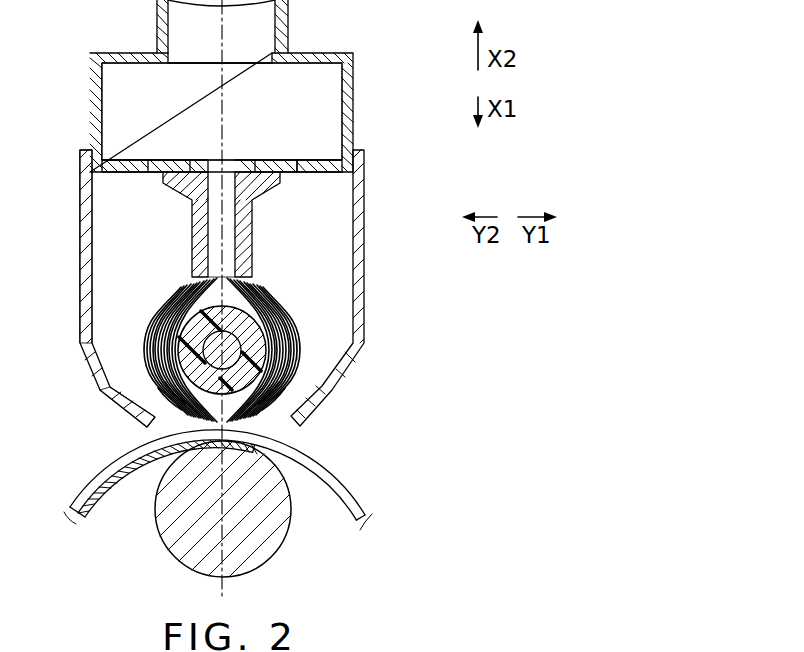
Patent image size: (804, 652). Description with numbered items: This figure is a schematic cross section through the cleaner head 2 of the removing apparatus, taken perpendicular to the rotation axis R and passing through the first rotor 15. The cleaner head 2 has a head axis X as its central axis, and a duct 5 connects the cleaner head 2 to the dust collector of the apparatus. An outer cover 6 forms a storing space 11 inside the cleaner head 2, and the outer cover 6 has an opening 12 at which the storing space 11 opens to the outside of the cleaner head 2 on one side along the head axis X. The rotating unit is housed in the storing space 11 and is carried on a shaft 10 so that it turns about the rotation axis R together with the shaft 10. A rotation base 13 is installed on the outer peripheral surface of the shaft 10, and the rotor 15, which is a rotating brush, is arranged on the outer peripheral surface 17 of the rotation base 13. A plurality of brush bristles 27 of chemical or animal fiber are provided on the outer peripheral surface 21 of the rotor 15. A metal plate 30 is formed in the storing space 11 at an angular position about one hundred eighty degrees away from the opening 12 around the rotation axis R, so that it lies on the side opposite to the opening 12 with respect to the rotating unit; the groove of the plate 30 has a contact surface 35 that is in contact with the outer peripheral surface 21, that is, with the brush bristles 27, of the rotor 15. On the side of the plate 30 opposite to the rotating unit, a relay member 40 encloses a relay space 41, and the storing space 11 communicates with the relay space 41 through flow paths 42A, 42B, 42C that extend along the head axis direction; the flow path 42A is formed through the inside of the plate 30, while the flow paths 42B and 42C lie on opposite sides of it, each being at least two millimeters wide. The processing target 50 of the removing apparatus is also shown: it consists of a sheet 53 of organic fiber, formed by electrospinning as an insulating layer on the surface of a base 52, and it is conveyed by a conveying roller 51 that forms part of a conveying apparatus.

The cleaner head 2 is at (378, 137).
The duct 5 is at (288, 21).
The outer cover 6 is at (80, 307).
The shaft 10 is at (152, 368).
The storing space 11 is at (94, 249).
The opening 12 is at (162, 425).
The rotation base 13 is at (252, 356).
The rotor 15 is at (265, 307).
The outer peripheral surface of the rotation base 17 is at (258, 404).
The outer peripheral surface of the rotor 21 is at (164, 303).
The brush bristles 27 is at (187, 292).
The plate 30 is at (262, 185).
The contact surface 35 is at (238, 276).
The relay member 40 is at (354, 78).
The relay space 41 is at (141, 80).
The flow path 42A is at (236, 167).
The flow path 42B is at (310, 163).
The flow path 42C is at (135, 165).
The processing target 50 is at (365, 503).
The conveying roller 51 is at (282, 530).
The base 52 is at (323, 477).
The sheet 53 is at (143, 472).
The rotation axis R is at (292, 327).
The head axis X is at (224, 88).